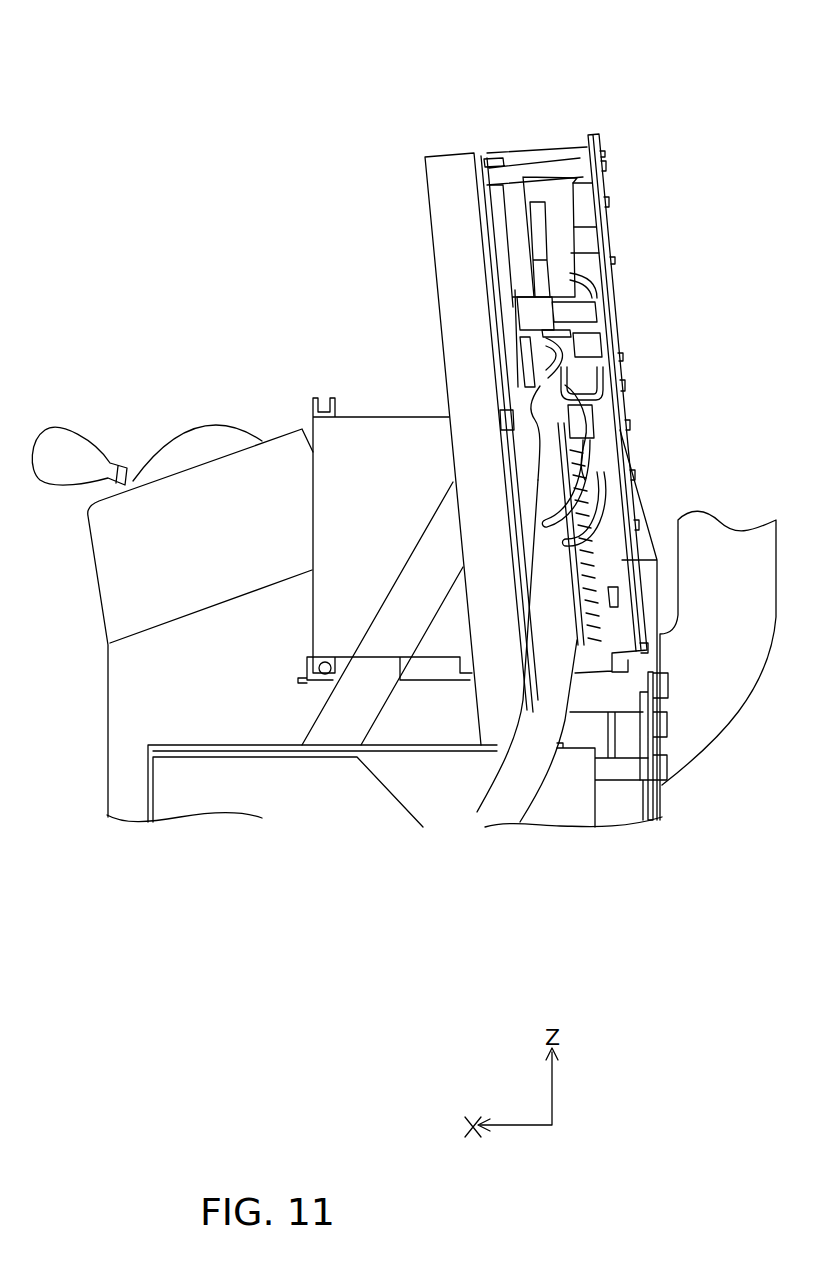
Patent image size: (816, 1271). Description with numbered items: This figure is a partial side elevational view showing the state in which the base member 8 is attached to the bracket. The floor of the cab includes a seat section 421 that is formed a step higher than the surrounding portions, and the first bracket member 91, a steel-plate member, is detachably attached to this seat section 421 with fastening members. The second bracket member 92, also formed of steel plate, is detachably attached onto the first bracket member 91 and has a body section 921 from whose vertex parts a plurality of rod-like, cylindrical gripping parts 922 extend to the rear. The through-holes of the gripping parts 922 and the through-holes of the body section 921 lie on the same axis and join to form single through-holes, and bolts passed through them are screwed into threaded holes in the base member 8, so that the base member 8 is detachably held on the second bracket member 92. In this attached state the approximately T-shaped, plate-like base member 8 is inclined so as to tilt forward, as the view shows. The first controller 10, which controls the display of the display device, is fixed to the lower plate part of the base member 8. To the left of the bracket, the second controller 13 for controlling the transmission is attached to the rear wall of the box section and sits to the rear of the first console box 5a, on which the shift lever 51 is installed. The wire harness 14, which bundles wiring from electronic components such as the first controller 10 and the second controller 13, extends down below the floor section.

The first console box 5a is at (97, 573).
The base member 8 is at (593, 134).
The first controller 10 is at (603, 523).
The second controller 13 is at (373, 438).
The wire harness 14 is at (518, 778).
The shift lever 51 is at (78, 430).
The first bracket member 91 is at (445, 153).
The second bracket member 92 is at (481, 156).
The body section 921 is at (485, 158).
The gripping parts 922 is at (560, 168).
The seat section 421 is at (147, 789).